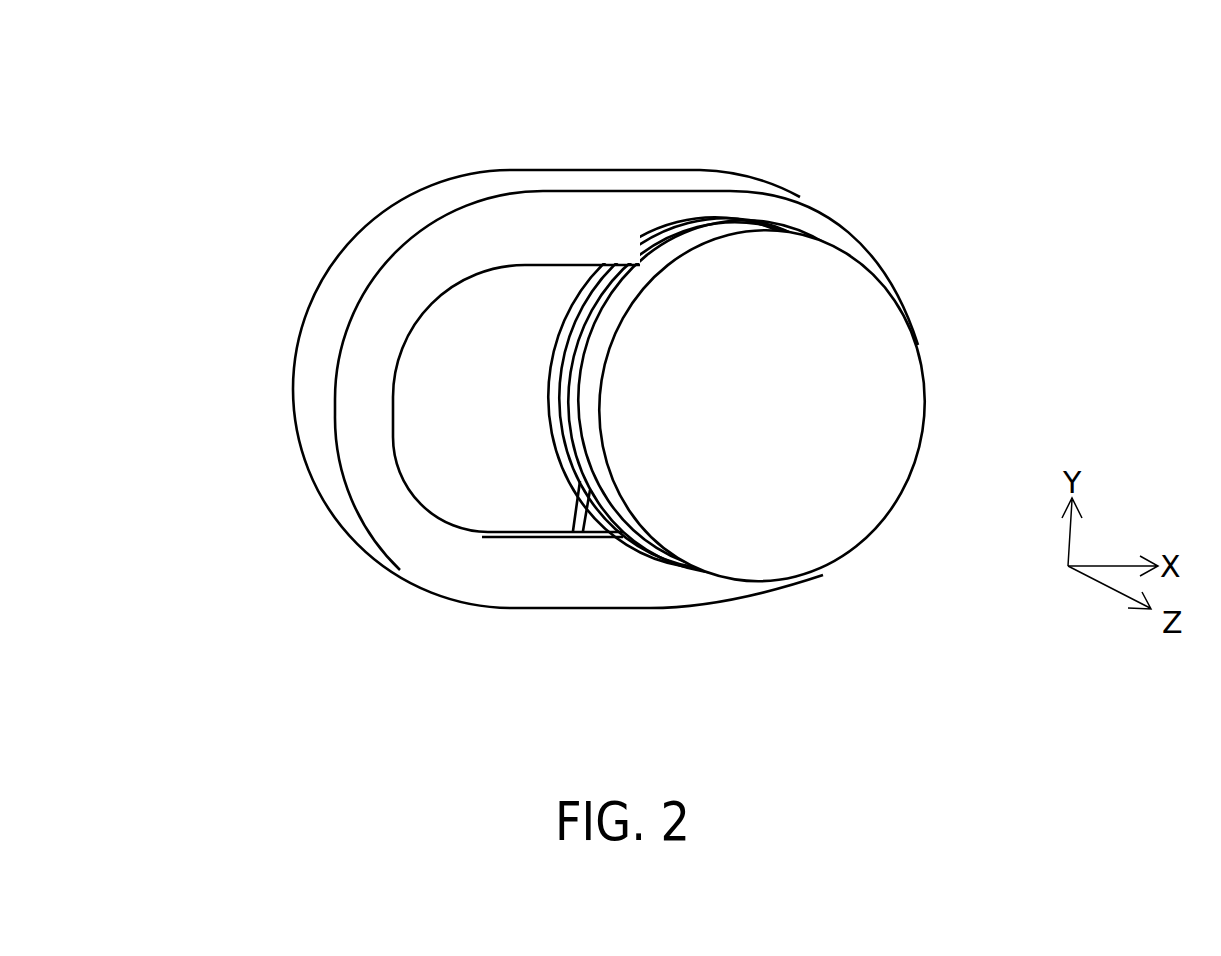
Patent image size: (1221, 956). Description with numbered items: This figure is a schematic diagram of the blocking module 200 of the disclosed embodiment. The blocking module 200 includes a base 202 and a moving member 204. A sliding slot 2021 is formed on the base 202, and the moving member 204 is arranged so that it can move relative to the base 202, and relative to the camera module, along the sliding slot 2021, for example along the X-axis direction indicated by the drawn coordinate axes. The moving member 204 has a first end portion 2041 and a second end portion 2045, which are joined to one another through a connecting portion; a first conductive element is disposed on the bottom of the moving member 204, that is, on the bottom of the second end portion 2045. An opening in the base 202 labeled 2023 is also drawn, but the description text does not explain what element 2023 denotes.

The blocking module 200 is at (505, 367).
The base 202 is at (352, 268).
The sliding slot 2021 is at (532, 531).
The opening of housing 2023 is at (428, 412).
The moving member 204 is at (779, 546).
The first end portion 2041 is at (672, 255).
The second end portion 2045 is at (568, 322).